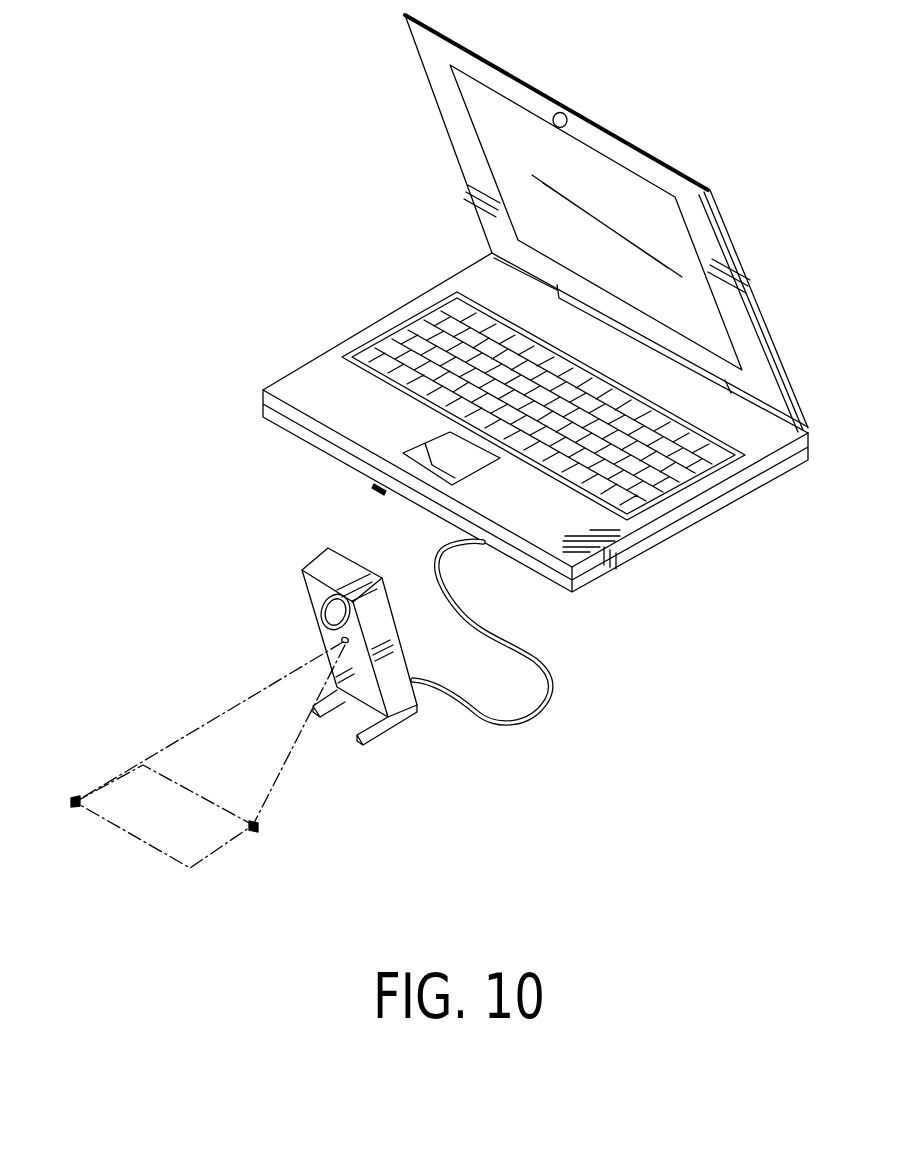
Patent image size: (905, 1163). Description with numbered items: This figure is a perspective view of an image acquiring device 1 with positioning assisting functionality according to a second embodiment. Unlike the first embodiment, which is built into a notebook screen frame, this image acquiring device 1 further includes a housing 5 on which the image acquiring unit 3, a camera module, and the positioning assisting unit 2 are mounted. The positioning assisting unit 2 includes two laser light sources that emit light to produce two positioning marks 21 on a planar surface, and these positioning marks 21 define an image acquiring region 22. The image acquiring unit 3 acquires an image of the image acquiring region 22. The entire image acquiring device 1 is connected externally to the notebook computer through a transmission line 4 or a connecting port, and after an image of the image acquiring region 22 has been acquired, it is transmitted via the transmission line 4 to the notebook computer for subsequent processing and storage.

The image acquiring device 1 is at (287, 604).
The positioning assisting unit 2 is at (342, 640).
The image acquiring unit 3 is at (334, 612).
The transmission line 4 is at (515, 722).
The housing 5 is at (316, 558).
The positioning marks 21 is at (77, 803).
The image acquiring region 22 is at (217, 853).